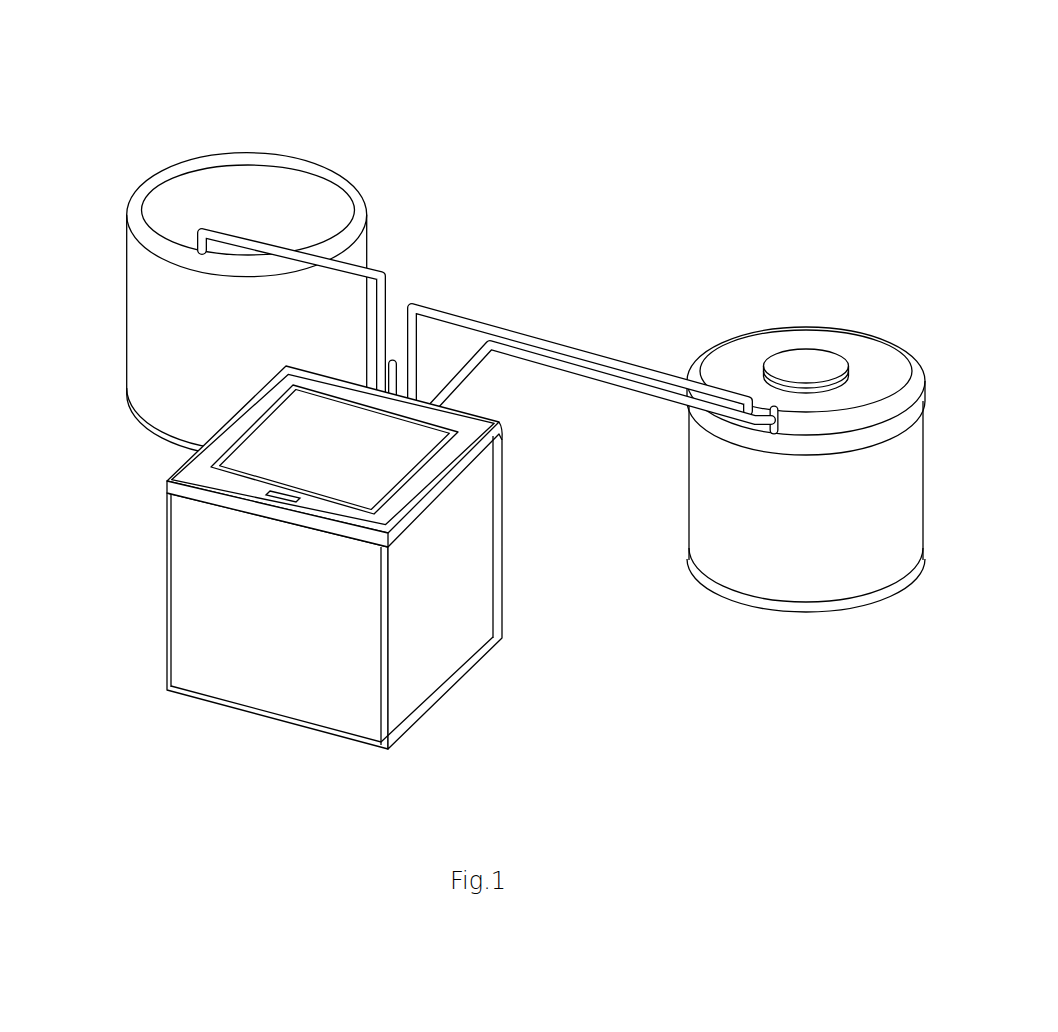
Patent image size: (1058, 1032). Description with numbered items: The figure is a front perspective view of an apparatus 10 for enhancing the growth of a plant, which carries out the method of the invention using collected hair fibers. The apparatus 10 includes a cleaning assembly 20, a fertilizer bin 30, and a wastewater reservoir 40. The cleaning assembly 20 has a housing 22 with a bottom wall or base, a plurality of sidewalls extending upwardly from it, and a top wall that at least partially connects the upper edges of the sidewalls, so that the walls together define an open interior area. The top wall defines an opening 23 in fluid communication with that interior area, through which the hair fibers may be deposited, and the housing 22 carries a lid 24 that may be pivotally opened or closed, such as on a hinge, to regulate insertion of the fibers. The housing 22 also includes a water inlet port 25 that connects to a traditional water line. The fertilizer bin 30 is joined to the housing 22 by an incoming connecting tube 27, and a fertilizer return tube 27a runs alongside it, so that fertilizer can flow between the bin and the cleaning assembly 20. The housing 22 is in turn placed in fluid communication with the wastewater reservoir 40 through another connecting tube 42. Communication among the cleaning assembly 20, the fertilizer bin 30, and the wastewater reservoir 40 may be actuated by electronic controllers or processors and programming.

The apparatus 10 is at (477, 374).
The cleaning assembly 20 is at (306, 557).
The housing 22 is at (481, 594).
The opening 23 is at (230, 444).
The lid 24 is at (273, 468).
The water inlet port 25 is at (394, 373).
The incoming connecting tube 27 is at (596, 378).
The fertilizer return tube 27a is at (587, 347).
The fertilizer bin 30 is at (906, 302).
The wastewater reservoir 40 is at (99, 341).
The connecting tube 42 is at (388, 268).